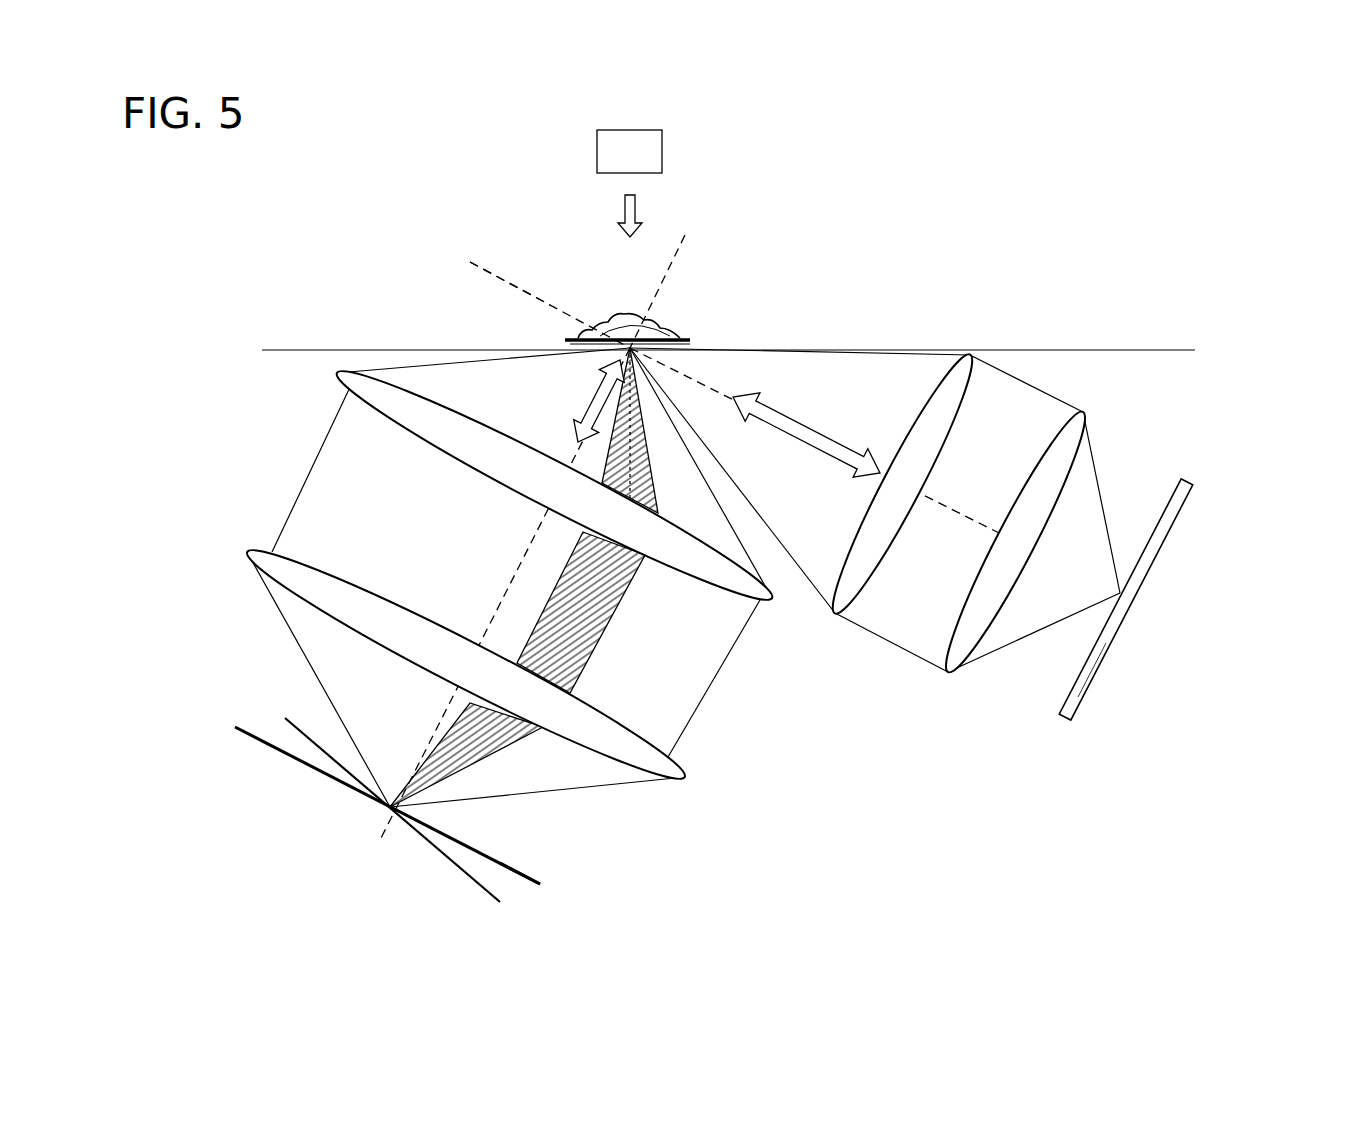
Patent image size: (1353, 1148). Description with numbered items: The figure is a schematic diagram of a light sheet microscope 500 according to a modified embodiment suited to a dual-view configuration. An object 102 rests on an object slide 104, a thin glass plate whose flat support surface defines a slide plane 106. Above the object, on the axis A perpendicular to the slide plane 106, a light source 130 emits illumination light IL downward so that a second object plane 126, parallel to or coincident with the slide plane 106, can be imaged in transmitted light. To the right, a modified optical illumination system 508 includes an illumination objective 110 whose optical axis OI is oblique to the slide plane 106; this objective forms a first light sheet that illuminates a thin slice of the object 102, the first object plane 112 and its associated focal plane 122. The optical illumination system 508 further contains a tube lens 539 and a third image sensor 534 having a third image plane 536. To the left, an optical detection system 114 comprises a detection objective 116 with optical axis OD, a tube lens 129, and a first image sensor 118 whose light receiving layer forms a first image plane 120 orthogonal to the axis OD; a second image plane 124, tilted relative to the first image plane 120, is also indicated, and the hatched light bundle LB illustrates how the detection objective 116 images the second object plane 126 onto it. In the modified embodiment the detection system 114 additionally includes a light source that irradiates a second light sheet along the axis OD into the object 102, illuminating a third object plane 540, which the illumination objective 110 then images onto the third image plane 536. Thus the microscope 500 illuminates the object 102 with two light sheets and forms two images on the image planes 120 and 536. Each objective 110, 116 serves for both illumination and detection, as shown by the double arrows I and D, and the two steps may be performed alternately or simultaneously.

The light sheet microscope 500 is at (324, 167).
The light source 130 is at (662, 150).
The illumination light IL is at (643, 205).
The first object plane 112 is at (492, 272).
The focal plane 122 is at (510, 283).
The object plane 540 is at (678, 258).
The object 102 is at (615, 312).
The second object plane 126 is at (668, 326).
The object slide 104 is at (567, 338).
The slide plane 106 is at (692, 336).
The detection objective 116 is at (350, 385).
The tube lens 129 is at (248, 556).
The optical detection system 114 is at (212, 484).
The first image sensor 118 is at (236, 727).
The second image plane 124 is at (300, 728).
The first image plane 120 is at (540, 884).
The illumination objective 110 is at (843, 606).
The tube lens 539 is at (1088, 418).
The third image sensor 534 is at (1179, 512).
The third image plane 536 is at (1073, 690).
The optical illumination system 508 is at (1195, 428).
The axis A is at (632, 486).
The light bundle LB is at (597, 620).
The optical axis of the detection objective OD is at (516, 566).
The optical axis of the illumination objective OI is at (952, 504).
The double arrow (detection objective) D is at (585, 390).
The double arrow (illumination objective) I is at (814, 418).